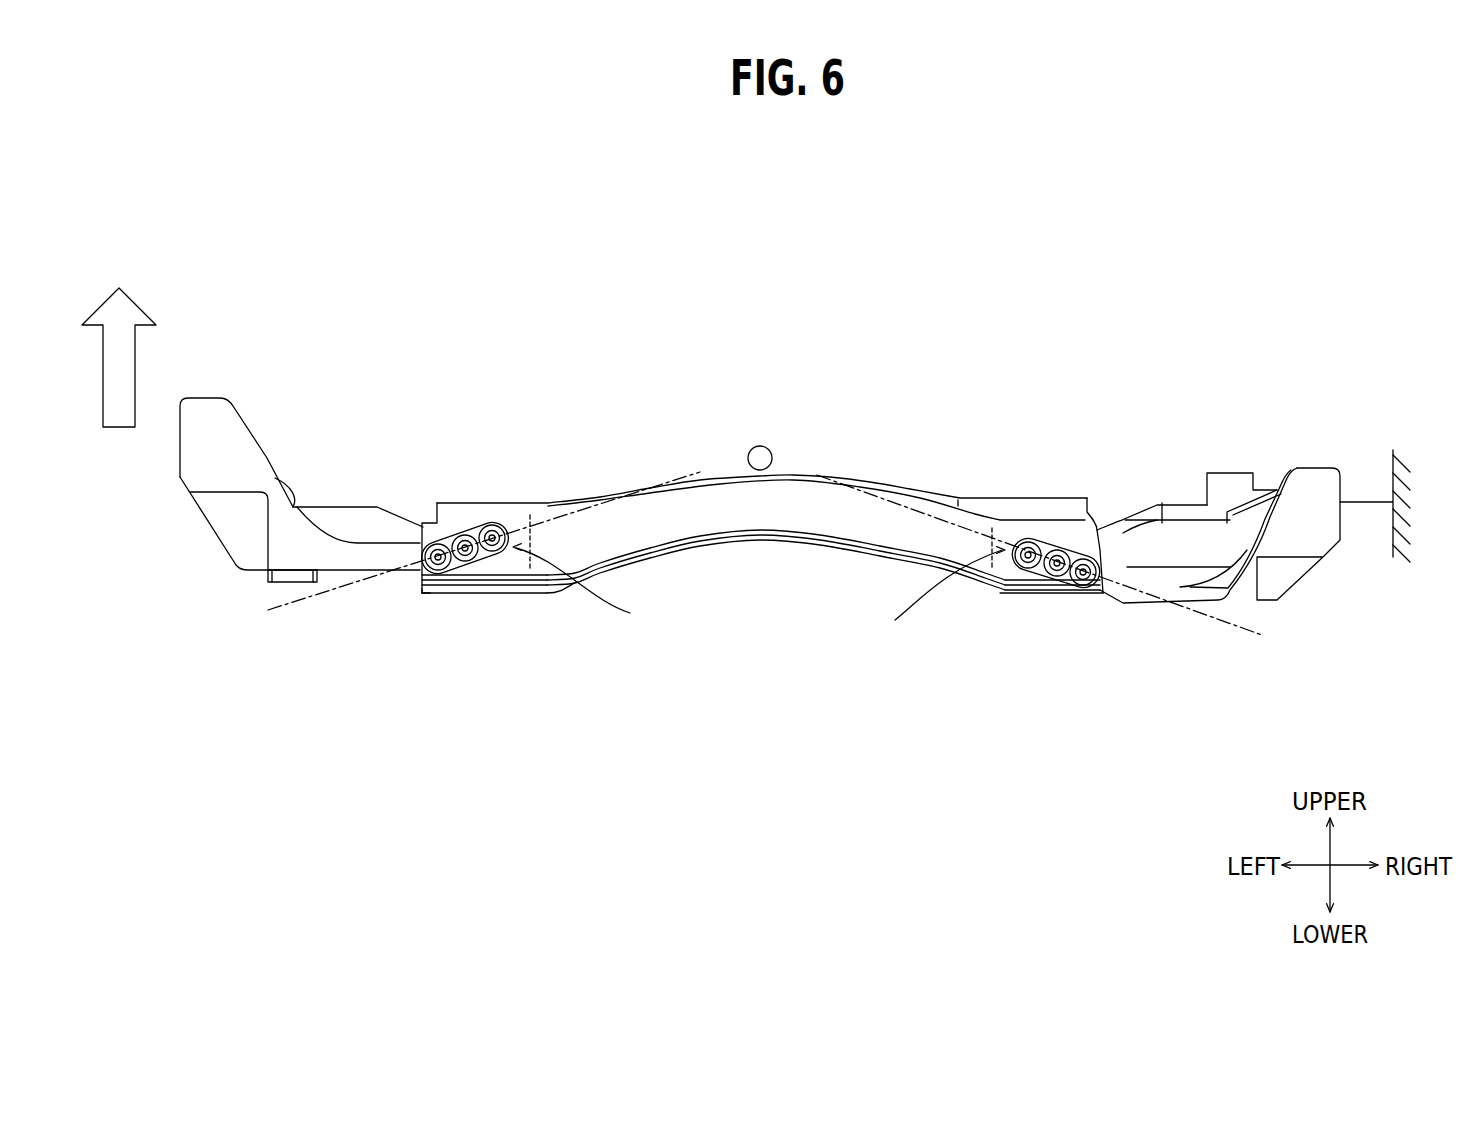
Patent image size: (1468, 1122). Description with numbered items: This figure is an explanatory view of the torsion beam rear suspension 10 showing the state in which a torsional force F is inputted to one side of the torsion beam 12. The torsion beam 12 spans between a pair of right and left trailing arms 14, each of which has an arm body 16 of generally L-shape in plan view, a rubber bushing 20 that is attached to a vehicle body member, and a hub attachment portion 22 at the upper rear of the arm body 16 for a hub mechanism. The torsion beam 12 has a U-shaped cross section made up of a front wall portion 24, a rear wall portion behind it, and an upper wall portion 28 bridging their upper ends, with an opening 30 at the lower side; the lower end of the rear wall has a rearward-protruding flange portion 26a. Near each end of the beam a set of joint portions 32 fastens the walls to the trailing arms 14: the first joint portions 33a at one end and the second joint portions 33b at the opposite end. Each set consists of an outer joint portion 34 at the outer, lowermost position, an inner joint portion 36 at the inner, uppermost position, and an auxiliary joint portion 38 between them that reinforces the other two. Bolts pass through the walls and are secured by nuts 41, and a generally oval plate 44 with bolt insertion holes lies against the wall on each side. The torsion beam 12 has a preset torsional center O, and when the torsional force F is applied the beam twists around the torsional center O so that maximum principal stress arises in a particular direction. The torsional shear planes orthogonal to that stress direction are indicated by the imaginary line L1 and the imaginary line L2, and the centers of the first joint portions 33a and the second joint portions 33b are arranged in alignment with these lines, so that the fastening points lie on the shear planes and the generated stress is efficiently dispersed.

The torsion beam rear suspension 10 is at (985, 326).
The torsion beam 12 is at (883, 463).
The trailing arm 14 is at (263, 592).
The arm body 16 is at (1180, 503).
The rubber bushing 20 is at (267, 572).
The hub attachment portion 22 is at (193, 522).
The front wall portion 24 is at (857, 518).
The flange portion 26a is at (463, 594).
The upper wall portion 28 is at (945, 495).
The opening 30 is at (453, 594).
The joint portions 32 is at (506, 633).
The first joint portions 33a is at (1042, 586).
The second joint portions 33b is at (473, 578).
The outer joint portion 34 is at (422, 598).
The inner joint portion 36 is at (547, 576).
The auxiliary joint portion 38 is at (483, 562).
The nut 41 is at (428, 540).
The plate 44 is at (759, 593).
The imaginary line L1 is at (300, 603).
The imaginary line L2 is at (1235, 625).
The torsional center O is at (770, 446).
The torsional force F is at (119, 378).